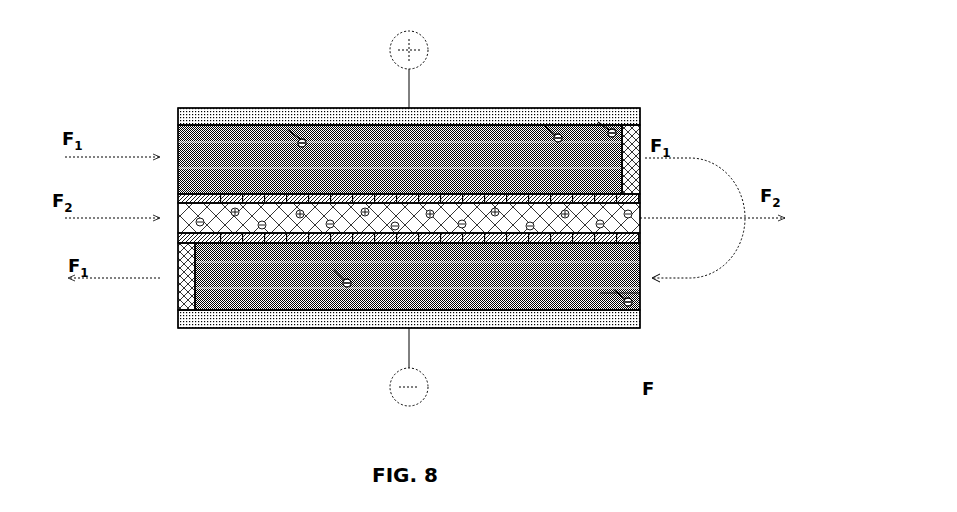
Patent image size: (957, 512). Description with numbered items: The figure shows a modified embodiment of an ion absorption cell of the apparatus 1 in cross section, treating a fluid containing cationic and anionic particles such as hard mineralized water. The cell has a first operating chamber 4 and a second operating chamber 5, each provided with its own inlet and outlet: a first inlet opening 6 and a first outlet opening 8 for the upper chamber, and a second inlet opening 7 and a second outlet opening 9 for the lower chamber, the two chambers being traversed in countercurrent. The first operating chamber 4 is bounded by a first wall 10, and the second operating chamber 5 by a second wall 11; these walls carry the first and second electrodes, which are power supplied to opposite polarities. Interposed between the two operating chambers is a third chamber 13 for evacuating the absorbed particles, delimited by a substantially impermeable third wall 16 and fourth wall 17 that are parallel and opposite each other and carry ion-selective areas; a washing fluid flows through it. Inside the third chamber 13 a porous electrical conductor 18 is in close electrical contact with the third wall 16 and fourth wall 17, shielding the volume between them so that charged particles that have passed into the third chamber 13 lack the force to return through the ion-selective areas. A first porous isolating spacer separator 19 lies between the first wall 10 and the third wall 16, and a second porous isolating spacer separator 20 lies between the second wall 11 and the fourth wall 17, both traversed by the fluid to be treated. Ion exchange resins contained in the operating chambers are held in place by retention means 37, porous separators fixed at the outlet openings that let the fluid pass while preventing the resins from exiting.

The apparatus 1 is at (695, 220).
The first operating chamber 4 is at (614, 130).
The second operating chamber 5 is at (640, 300).
The first inlet opening 6 is at (178, 140).
The second inlet opening 7 is at (178, 310).
The first outlet opening 8 is at (640, 128).
The second outlet opening 9 is at (640, 293).
The first wall 10 is at (460, 108).
The second wall 11 is at (478, 328).
The third chamber 13 is at (640, 215).
The third wall 16 is at (178, 200).
The fourth wall 17 is at (178, 238).
The porous electrical conductor 18 is at (300, 138).
The first porous isolating spacer separator 19 is at (560, 134).
The second porous isolating spacer separator 20 is at (345, 286).
The retention means 37 is at (178, 283).